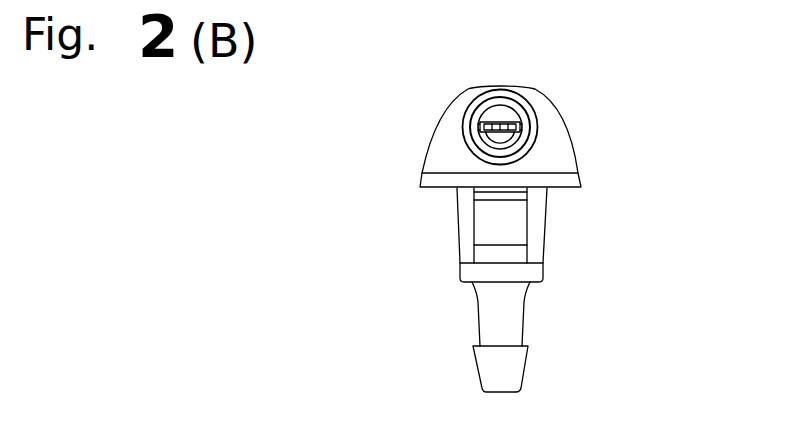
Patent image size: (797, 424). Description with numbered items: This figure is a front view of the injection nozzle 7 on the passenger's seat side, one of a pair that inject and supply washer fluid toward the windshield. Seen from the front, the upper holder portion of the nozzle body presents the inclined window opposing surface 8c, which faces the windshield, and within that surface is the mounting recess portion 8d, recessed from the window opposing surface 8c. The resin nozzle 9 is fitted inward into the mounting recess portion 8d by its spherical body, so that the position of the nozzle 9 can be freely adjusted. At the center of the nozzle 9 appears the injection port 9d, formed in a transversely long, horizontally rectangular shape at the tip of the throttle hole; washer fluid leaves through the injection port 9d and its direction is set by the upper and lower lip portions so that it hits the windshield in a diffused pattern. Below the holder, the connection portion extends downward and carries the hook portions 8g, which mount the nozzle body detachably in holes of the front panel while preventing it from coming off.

The injection nozzle 7 is at (411, 108).
The window opposing surface 8c is at (560, 145).
The mounting recess portion 8d is at (528, 116).
The hook portion 8g is at (493, 220).
The nozzle 9 is at (505, 115).
The injection port 9d is at (510, 133).